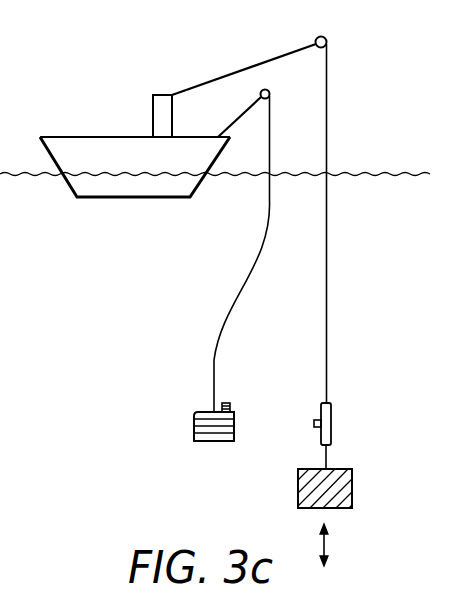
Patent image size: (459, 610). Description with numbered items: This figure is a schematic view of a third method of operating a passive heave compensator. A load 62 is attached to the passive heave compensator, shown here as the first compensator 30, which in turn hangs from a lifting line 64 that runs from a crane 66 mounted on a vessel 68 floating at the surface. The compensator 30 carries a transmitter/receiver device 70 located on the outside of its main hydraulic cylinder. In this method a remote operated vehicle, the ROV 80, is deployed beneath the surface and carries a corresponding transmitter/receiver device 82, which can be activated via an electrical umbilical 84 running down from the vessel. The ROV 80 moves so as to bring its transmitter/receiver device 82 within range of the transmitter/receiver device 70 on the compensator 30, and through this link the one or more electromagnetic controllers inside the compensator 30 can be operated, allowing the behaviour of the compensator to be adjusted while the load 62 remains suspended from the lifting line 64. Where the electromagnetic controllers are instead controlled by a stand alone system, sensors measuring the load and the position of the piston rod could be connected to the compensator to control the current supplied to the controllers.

The first compensator 30 is at (332, 413).
The load 62 is at (353, 482).
The lifting line 64 is at (329, 108).
The crane 66 is at (236, 70).
The vessel 68 is at (150, 167).
The transmitter/receiver device 70 is at (314, 423).
The ROV 80 is at (194, 421).
The transmitter/receiver device 82 is at (233, 403).
The electrical umbilical 84 is at (247, 290).